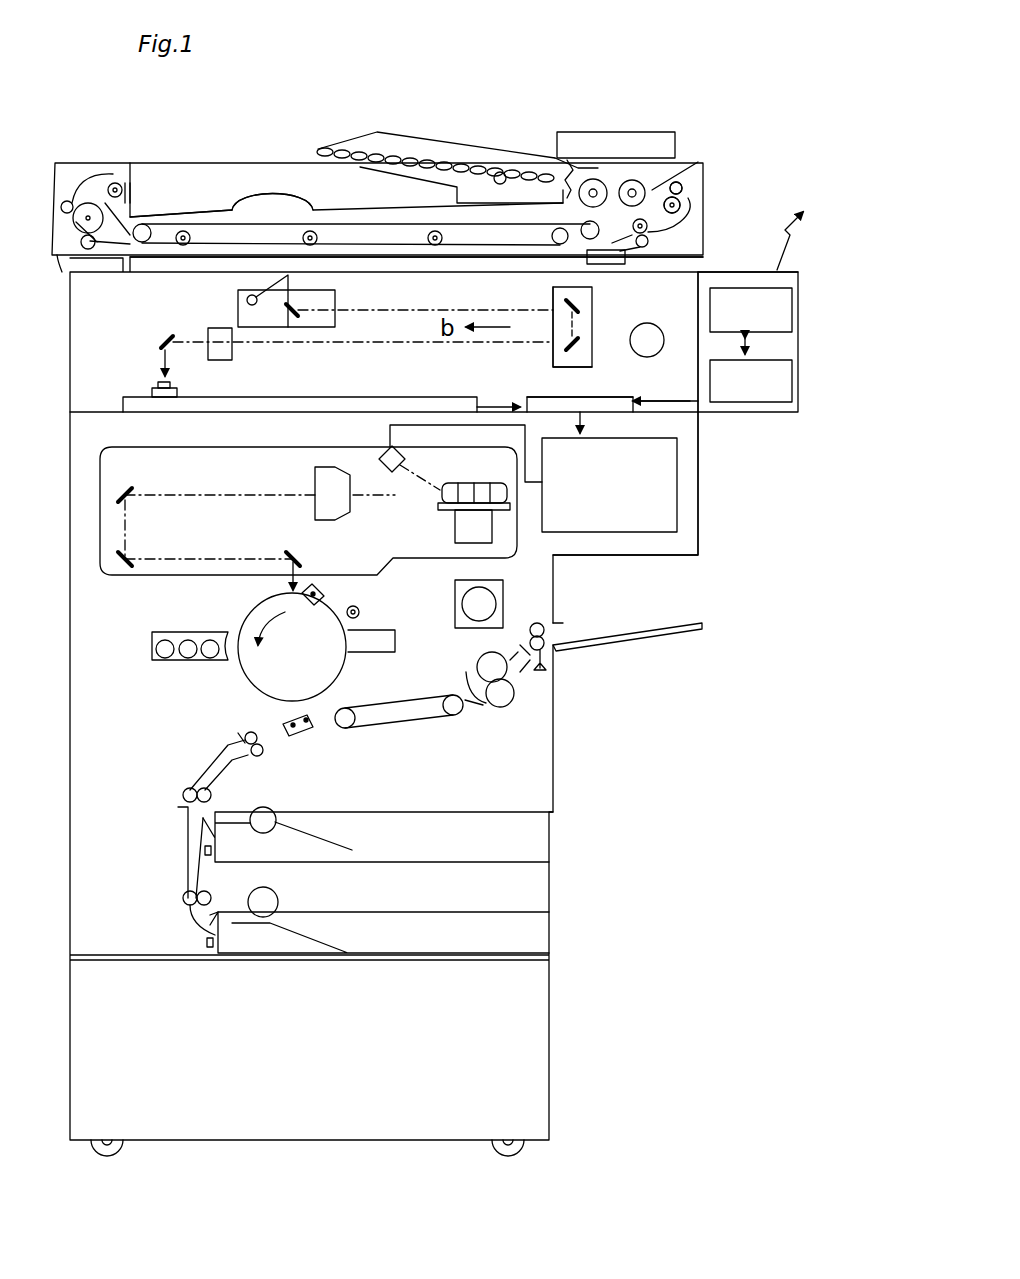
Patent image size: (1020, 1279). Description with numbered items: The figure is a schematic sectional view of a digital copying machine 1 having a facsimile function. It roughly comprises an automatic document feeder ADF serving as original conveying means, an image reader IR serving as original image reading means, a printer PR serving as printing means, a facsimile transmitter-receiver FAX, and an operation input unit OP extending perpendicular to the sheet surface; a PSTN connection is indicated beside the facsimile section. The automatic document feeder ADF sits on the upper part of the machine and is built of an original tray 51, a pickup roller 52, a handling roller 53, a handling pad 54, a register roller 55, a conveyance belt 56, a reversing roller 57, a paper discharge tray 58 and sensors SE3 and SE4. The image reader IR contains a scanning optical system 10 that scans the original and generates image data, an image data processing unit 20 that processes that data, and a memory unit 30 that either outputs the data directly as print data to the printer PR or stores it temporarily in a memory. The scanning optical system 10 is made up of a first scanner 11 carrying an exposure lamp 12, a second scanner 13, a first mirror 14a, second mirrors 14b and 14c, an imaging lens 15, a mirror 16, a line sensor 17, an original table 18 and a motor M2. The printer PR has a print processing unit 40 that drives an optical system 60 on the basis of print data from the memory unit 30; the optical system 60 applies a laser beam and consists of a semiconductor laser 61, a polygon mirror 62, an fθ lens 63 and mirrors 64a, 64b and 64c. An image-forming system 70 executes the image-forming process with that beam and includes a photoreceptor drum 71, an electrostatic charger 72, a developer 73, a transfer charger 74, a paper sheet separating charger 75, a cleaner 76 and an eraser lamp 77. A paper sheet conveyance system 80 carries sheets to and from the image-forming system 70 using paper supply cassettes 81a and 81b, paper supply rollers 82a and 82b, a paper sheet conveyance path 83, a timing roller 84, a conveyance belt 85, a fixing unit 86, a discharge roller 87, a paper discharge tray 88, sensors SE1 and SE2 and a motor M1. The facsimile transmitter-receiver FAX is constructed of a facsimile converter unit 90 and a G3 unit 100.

The digital copying machine 1 is at (122, 101).
The scanning optical system 10 is at (104, 306).
The first scanner 11 is at (238, 308).
The exposure lamp 12 is at (247, 298).
The second scanner 13 is at (600, 352).
The first mirror 14a is at (285, 325).
The second mirror 14b is at (580, 305).
The second mirror 14c is at (580, 386).
The imaging lens 15 is at (218, 360).
The mirror 16 is at (157, 344).
The line sensor 17 is at (154, 383).
The original table 18 is at (466, 262).
The image data processing unit 20 is at (375, 398).
The memory unit 30 is at (540, 397).
The print processing unit 40 is at (677, 500).
The original tray 51 is at (443, 160).
The pickup roller 52 is at (590, 178).
The handling roller 53 is at (628, 179).
The handling pad 54 is at (668, 184).
The register roller 55 is at (685, 195).
The conveyance belt 56 is at (350, 213).
The reversing roller 57 is at (49, 280).
The paper discharge tray 58 is at (170, 207).
The optical system 60 is at (236, 482).
The semiconductor laser 61 is at (408, 458).
The polygon mirror 62 is at (440, 500).
The fθ lens 63 is at (312, 474).
The mirror 64a is at (140, 470).
The mirror 64b is at (120, 570).
The mirror 64c is at (302, 560).
The image-forming system 70 is at (208, 616).
The photoreceptor drum 71 is at (238, 675).
The electrostatic charger 72 is at (326, 592).
The developer 73 is at (172, 660).
The transfer charger 74 is at (290, 738).
The paper sheet separating charger 75 is at (315, 732).
The cleaner 76 is at (395, 640).
The eraser lamp 77 is at (359, 612).
The paper sheet conveyance system 80 is at (418, 804).
The paper supply cassette 81a is at (505, 812).
The paper supply cassette 81b is at (412, 912).
The paper supply roller 82a is at (276, 812).
The paper supply roller 82b is at (280, 896).
The paper sheet conveyance path 83 is at (196, 760).
The timing roller 84 is at (242, 736).
The conveyance belt 85 is at (378, 705).
The fixing unit 86 is at (477, 675).
The discharge roller 87 is at (548, 632).
The paper discharge tray 88 is at (668, 622).
The facsimile converter unit 90 is at (782, 378).
The G3 unit 100 is at (750, 288).
The sensor SE1 is at (200, 851).
The sensor SE2 is at (204, 944).
The sensor SE3 is at (500, 171).
The sensor SE4 is at (722, 192).
The motor M1 is at (479, 604).
The motor M2 is at (647, 340).
The automatic document feeder ADF is at (80, 162).
The image reader IR is at (64, 358).
The operation input unit OP is at (718, 264).
The public switched telephone network PSTN is at (795, 224).
The facsimile transmitter-receiver FAX is at (750, 414).
The printer PR is at (708, 572).